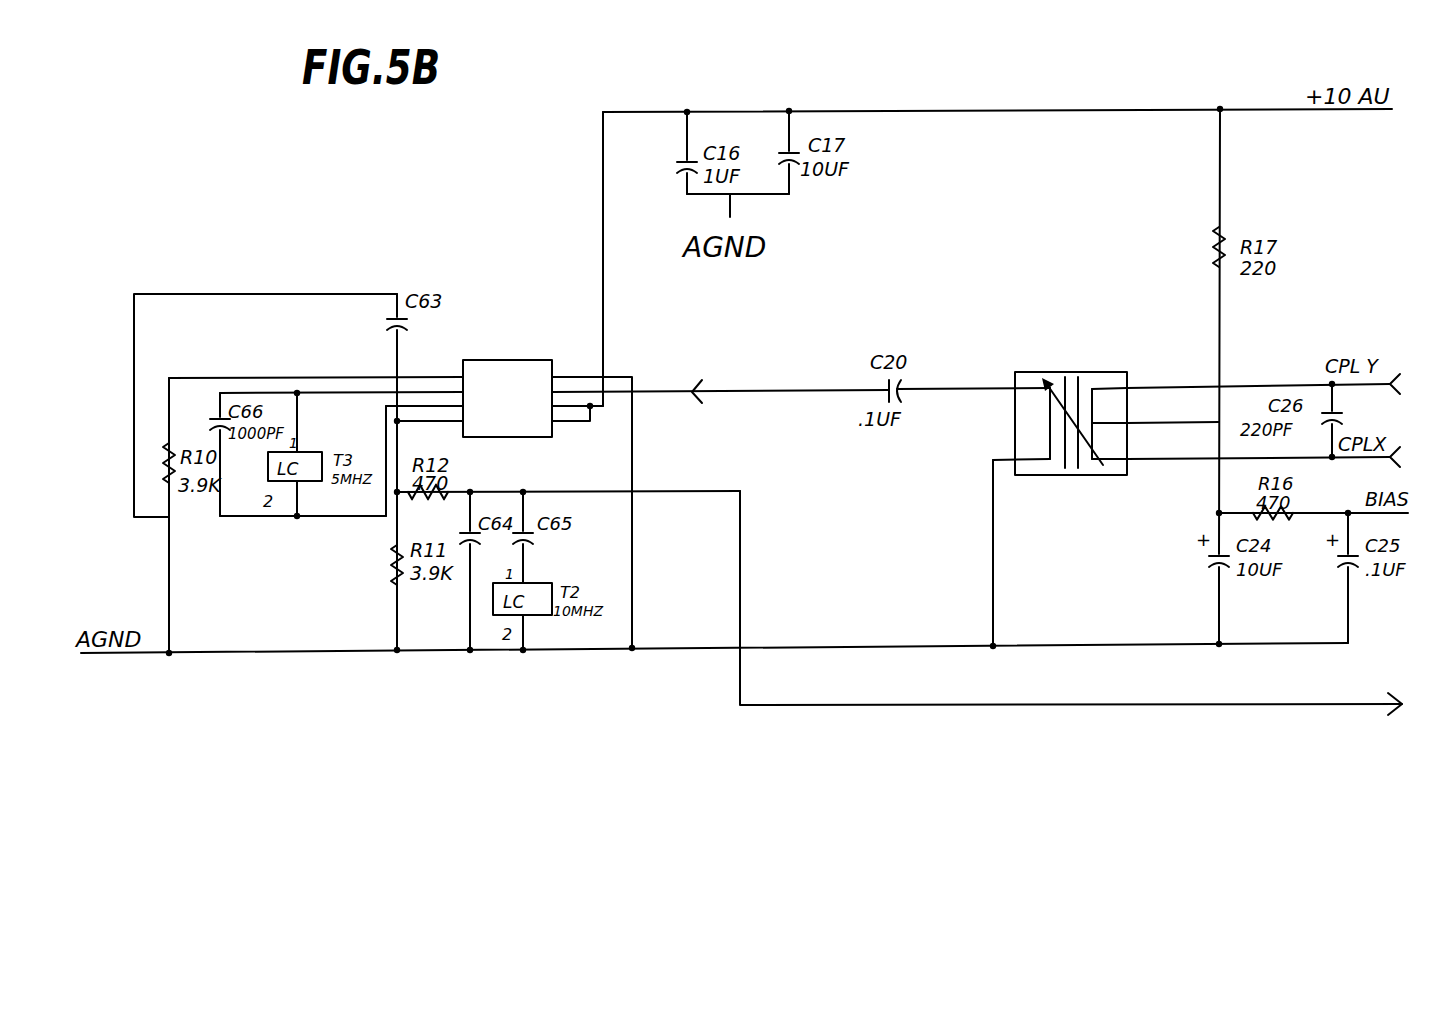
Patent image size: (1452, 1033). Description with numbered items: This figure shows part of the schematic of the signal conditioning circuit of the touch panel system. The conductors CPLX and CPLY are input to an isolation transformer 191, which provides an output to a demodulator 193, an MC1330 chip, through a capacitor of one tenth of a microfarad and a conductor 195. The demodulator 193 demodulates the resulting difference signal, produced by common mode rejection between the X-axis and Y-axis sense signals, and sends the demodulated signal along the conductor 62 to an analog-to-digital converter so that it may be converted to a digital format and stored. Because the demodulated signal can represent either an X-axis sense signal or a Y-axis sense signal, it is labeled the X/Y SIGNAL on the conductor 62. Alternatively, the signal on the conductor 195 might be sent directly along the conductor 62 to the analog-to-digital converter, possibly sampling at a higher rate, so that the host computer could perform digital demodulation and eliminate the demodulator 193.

The demodulator 193 is at (512, 360).
The isolation transformer 191 is at (1073, 363).
The conductor 195 is at (750, 395).
The conductor 62 is at (1132, 705).